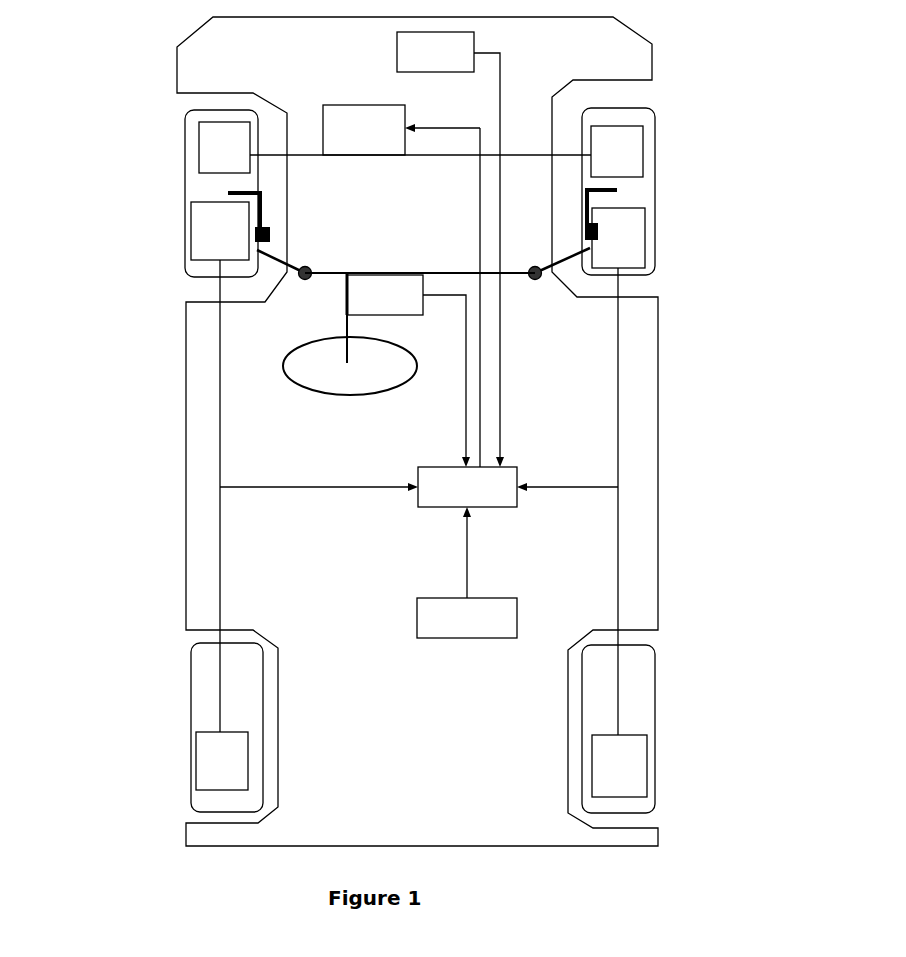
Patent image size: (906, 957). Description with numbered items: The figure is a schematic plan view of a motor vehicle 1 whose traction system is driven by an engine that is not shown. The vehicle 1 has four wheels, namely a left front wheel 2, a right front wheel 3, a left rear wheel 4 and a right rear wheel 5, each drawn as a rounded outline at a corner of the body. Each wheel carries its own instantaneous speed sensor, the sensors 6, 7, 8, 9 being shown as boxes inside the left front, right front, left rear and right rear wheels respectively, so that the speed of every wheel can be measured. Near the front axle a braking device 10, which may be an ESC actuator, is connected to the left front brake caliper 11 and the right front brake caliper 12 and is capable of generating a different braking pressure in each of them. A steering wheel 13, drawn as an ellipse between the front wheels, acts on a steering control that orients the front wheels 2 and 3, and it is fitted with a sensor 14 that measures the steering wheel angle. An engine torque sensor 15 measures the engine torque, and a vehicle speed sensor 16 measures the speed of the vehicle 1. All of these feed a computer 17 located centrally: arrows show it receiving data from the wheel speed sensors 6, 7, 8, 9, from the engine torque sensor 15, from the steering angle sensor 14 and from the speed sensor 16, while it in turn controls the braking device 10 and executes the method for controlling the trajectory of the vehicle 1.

The motor vehicle 1 is at (165, 492).
The left front wheel 2 is at (168, 192).
The right front wheel 3 is at (676, 192).
The left rear wheel 4 is at (170, 727).
The right rear wheel 5 is at (679, 724).
The instantaneous speed sensor 6 is at (220, 231).
The instantaneous speed sensor 7 is at (618, 238).
The instantaneous speed sensor 8 is at (222, 761).
The instantaneous speed sensor 9 is at (619, 766).
The braking device 10 is at (364, 130).
The left front brake caliper 11 is at (224, 147).
The right front brake caliper 12 is at (617, 151).
The steering wheel 13 is at (272, 369).
The steering wheel angle sensor 14 is at (385, 294).
The engine torque sensor 15 is at (435, 52).
The vehicle speed sensor 16 is at (467, 618).
The computer 17 is at (467, 487).